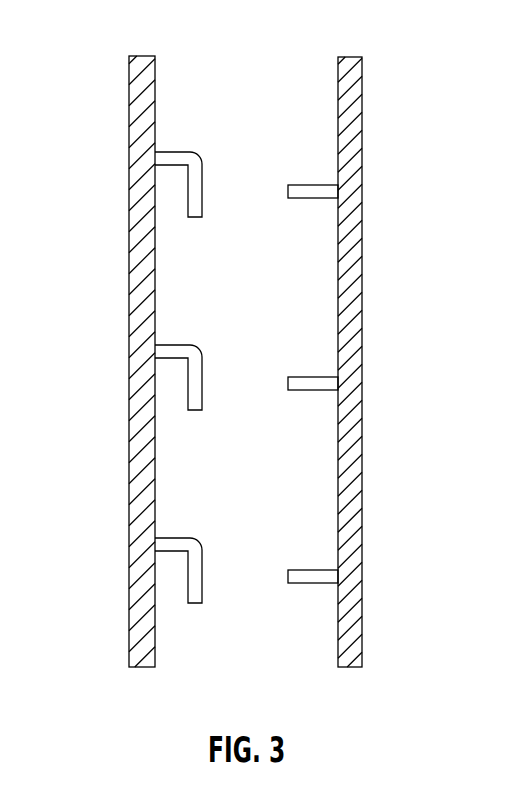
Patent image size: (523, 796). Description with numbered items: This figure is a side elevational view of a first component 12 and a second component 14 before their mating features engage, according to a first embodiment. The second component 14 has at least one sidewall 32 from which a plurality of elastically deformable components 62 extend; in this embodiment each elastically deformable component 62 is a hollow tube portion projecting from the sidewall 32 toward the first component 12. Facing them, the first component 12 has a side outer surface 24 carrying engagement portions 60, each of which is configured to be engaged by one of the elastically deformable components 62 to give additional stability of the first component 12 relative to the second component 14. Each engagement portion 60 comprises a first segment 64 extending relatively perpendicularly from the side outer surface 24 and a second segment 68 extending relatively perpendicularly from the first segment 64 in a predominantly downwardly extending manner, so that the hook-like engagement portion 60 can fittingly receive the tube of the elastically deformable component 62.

The first component 12 is at (106, 48).
The second component 14 is at (386, 48).
The side outer surface 24 is at (155, 278).
The sidewall 32 is at (338, 318).
The engagement portion 60 is at (203, 147).
The elastically deformable component 62 is at (311, 184).
The first segment 64 is at (175, 345).
The second segment 68 is at (202, 393).